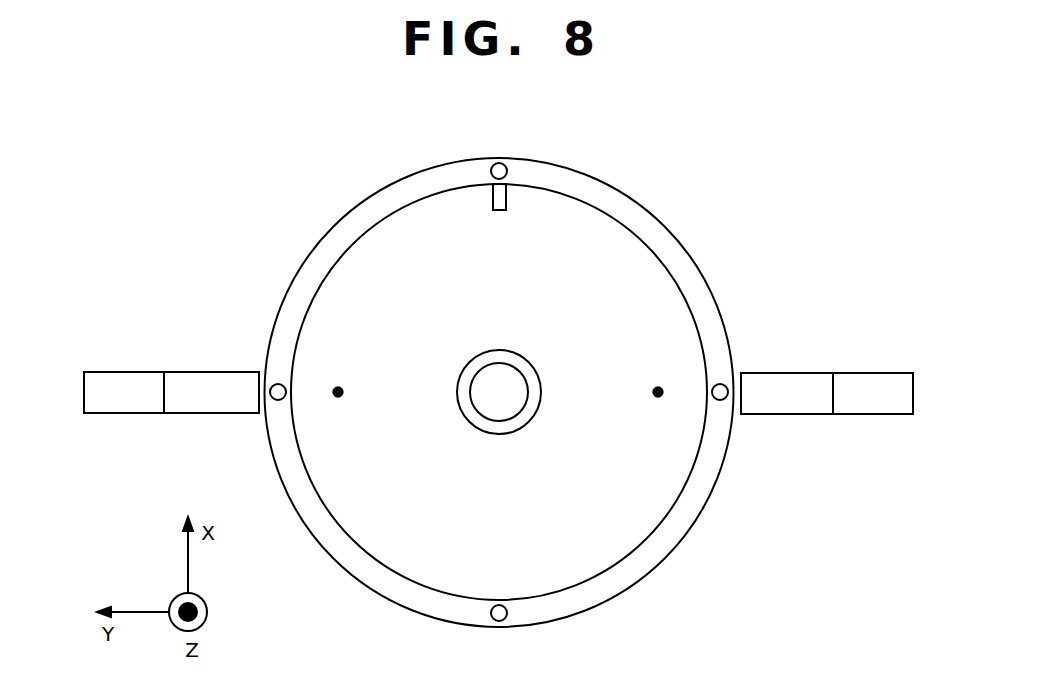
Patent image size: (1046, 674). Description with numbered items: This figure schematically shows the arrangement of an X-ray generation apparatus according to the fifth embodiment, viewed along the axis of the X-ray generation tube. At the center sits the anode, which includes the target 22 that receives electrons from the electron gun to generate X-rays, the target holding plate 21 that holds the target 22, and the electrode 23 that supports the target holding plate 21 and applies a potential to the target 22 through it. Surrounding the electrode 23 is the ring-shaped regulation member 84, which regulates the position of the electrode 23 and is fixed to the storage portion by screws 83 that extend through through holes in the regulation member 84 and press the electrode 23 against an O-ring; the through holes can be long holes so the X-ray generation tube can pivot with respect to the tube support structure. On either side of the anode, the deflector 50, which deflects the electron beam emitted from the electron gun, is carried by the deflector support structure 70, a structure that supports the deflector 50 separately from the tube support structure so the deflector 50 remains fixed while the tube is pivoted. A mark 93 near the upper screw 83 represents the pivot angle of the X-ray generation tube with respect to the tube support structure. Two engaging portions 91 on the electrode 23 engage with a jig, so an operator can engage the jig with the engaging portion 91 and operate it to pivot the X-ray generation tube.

The target holding plate 21 is at (474, 370).
The target 22 is at (504, 380).
The electrode 23 is at (640, 275).
The deflector 50 is at (205, 372).
The deflector support structure 70 is at (114, 372).
The screw 83 is at (498, 163).
The regulation member 84 is at (713, 308).
The engaging portion 91 is at (340, 386).
The mark 93 is at (497, 211).